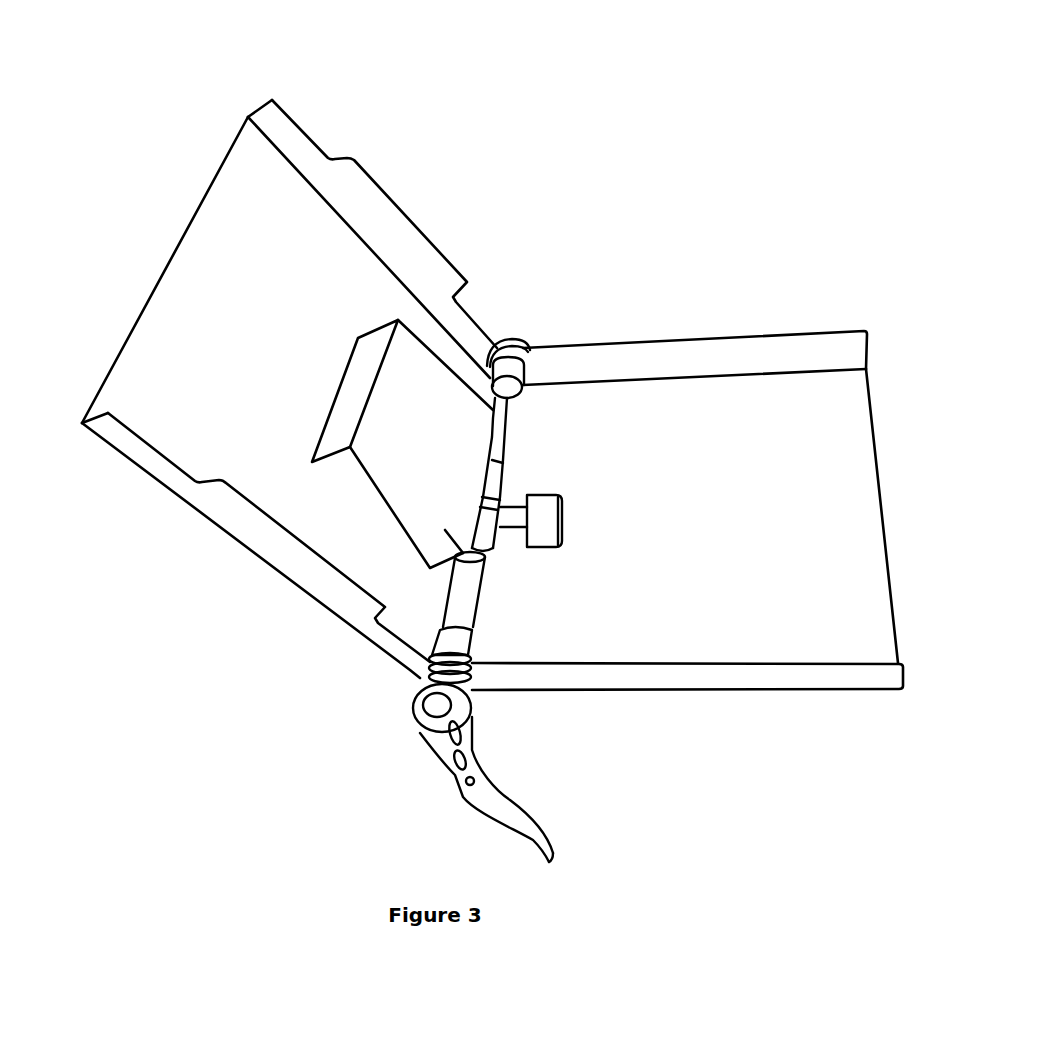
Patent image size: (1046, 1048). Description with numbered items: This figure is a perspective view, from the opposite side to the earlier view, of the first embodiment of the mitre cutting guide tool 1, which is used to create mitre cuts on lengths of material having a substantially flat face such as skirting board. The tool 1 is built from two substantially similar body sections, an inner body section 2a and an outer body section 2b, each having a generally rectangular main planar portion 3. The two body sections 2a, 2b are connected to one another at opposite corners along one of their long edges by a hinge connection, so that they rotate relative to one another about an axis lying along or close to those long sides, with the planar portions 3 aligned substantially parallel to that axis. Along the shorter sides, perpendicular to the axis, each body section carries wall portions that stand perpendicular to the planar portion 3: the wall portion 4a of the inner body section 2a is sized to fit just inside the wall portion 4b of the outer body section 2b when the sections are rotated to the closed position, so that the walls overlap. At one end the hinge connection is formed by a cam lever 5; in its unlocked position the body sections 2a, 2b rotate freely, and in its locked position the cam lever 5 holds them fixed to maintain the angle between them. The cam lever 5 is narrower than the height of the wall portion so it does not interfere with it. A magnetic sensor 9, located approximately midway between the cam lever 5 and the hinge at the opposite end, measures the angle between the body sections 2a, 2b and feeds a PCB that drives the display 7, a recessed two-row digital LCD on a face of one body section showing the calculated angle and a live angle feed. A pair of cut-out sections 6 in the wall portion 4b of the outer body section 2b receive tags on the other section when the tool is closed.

The mitre cutting guide tool 1 is at (565, 215).
The inner body section 2a is at (888, 293).
The outer body section 2b is at (157, 548).
The main planar portion 3 is at (243, 285).
The wall portion of the inner body section 4a is at (717, 355).
The wall portion of the outer body section 4b is at (273, 122).
The cam lever 5 is at (450, 770).
The cut-out sections 6 is at (482, 303).
The display 7 is at (285, 193).
The sensor 9 is at (500, 503).